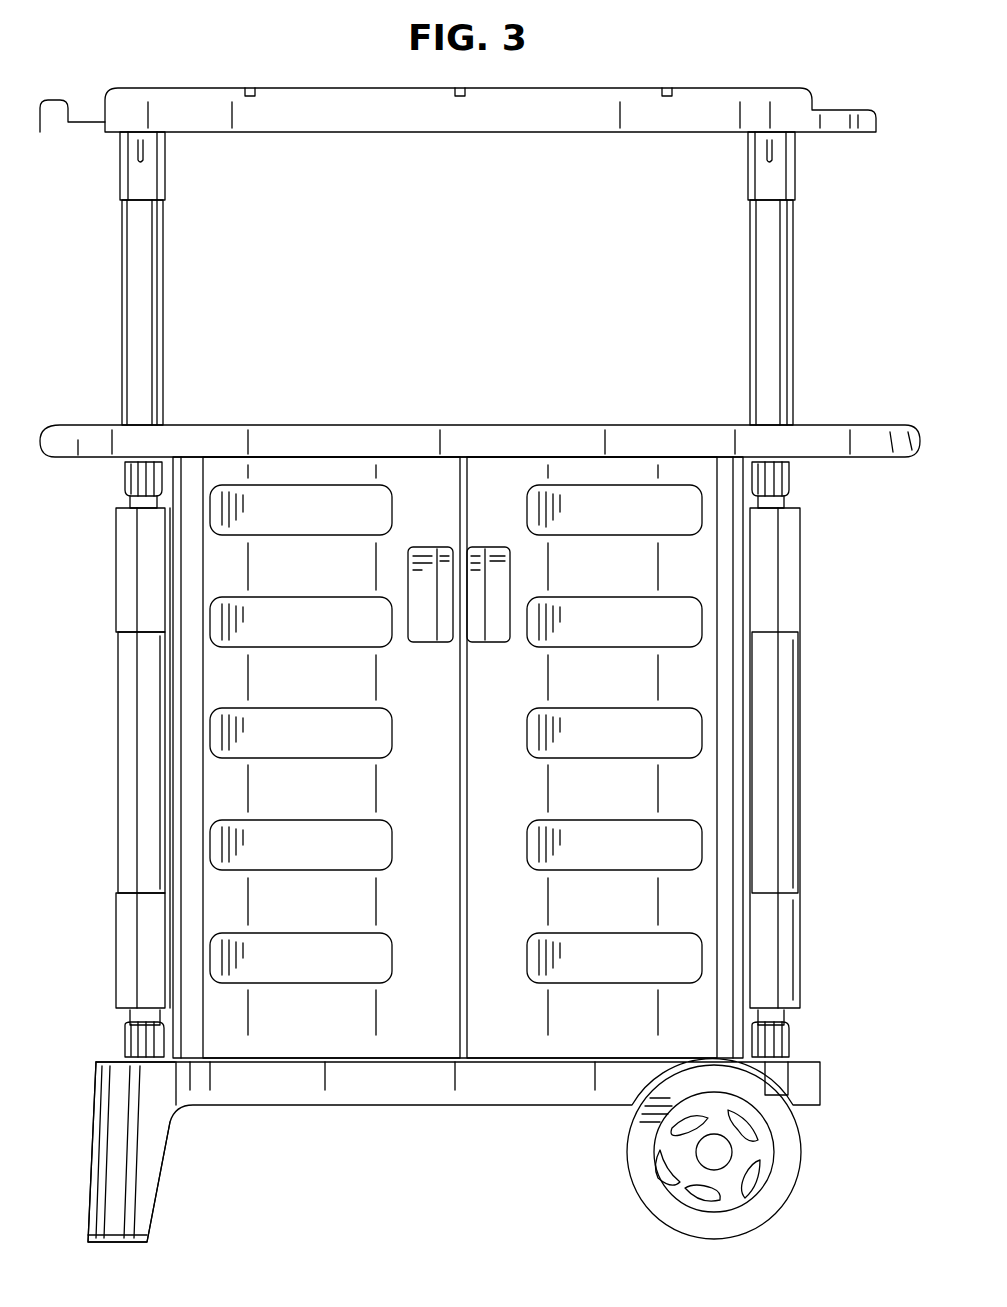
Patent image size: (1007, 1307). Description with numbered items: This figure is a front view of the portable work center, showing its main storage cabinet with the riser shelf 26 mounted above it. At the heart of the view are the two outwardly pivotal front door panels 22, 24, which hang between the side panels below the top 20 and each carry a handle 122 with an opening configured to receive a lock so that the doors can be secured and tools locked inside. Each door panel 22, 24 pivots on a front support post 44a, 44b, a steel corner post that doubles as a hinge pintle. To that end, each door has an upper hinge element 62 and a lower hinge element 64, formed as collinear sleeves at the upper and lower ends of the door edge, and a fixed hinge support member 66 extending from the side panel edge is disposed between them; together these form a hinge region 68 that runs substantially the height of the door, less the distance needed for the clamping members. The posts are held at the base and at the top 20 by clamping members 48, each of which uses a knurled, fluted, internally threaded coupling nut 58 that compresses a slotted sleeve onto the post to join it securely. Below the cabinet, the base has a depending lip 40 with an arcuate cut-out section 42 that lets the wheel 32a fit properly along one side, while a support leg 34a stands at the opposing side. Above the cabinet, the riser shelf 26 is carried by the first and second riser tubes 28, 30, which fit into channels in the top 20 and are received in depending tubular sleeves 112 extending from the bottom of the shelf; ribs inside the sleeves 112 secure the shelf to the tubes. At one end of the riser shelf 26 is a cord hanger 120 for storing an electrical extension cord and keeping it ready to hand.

The top 20 is at (430, 425).
The front door panel 22 is at (273, 1040).
The front door panel 24 is at (527, 1040).
The riser shelf 26 is at (645, 88).
The first riser tube 28 is at (122, 332).
The second riser tube 30 is at (793, 332).
The wheel 32a is at (768, 1206).
The support leg 34a is at (142, 1202).
The depending lip 40 is at (400, 1088).
The arcuate cut-out section 42 is at (642, 1092).
The front support post 44a is at (118, 505).
The front support post 44b is at (792, 498).
The clamping member 48 is at (112, 472).
The coupling nut 58 is at (792, 484).
The upper hinge element 62 is at (122, 594).
The lower hinge element 64 is at (122, 960).
The hinge support member 66 is at (122, 722).
The hinge region 68 is at (96, 1028).
The tubular sleeve 112 is at (128, 178).
The cord hanger 120 is at (57, 105).
The handle 122 is at (492, 548).